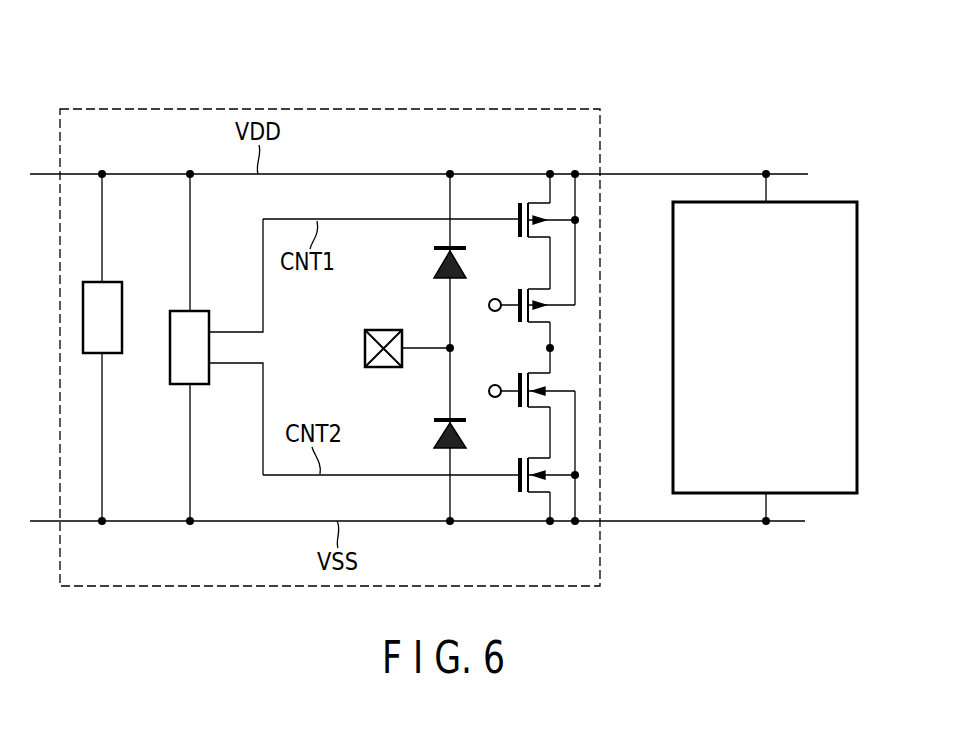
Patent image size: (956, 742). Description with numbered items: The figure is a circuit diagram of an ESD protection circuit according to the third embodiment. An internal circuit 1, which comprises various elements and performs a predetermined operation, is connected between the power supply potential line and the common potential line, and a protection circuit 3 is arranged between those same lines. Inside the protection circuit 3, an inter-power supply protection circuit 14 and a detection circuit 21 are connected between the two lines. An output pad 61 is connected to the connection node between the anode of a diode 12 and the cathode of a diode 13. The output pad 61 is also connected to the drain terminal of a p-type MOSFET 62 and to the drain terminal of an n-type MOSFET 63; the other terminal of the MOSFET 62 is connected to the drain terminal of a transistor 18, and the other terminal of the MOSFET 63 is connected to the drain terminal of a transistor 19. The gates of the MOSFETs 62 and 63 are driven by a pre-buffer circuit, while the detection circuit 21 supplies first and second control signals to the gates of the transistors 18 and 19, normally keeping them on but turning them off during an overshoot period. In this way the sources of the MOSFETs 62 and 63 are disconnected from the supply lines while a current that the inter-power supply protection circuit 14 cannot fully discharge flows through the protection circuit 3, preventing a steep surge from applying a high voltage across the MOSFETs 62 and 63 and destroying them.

The circuit 1 is at (832, 202).
The protection circuit 3 is at (362, 108).
The diode 12 is at (440, 258).
The diode 13 is at (440, 422).
The inter-power supply protection circuit 14 is at (92, 355).
The transistor 18 is at (535, 200).
The transistor 19 is at (535, 495).
The detection circuit 21 is at (178, 385).
The output pad 61 is at (365, 348).
The p-type MOSFET 62 is at (537, 284).
The n-type MOSFET 63 is at (537, 412).